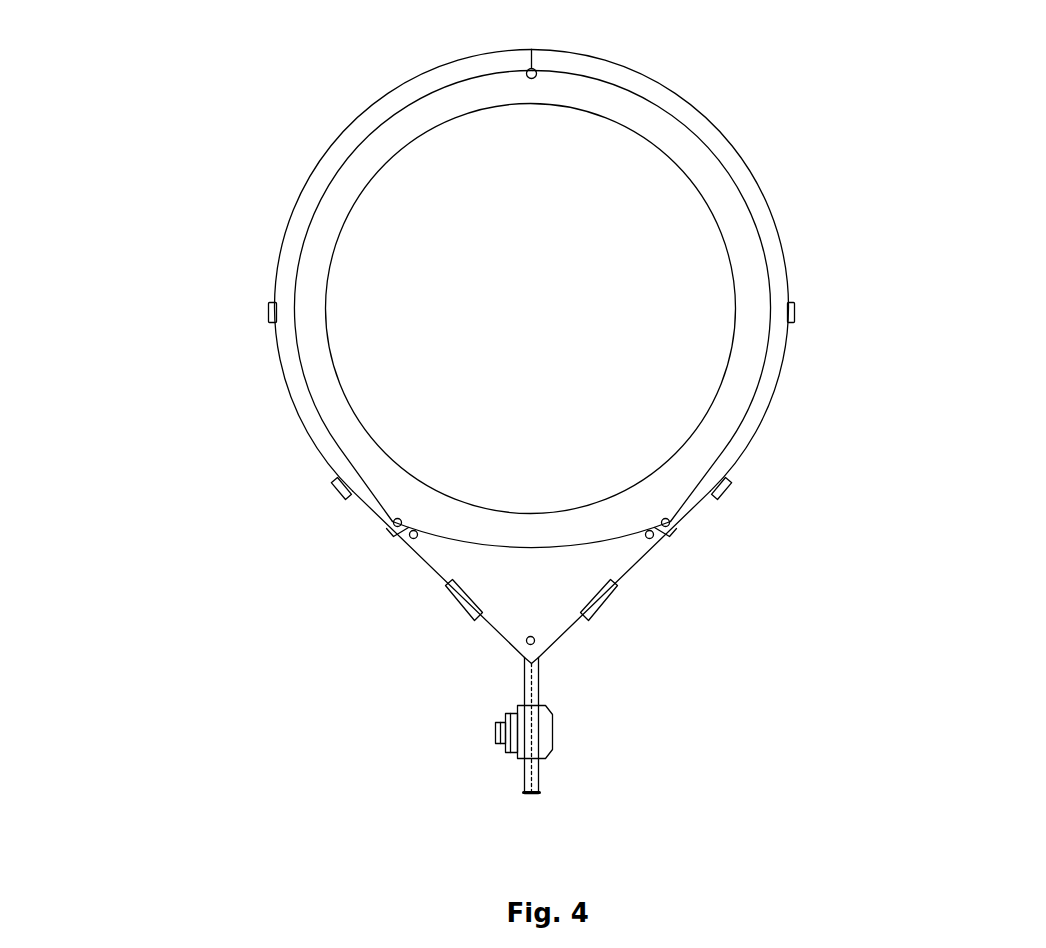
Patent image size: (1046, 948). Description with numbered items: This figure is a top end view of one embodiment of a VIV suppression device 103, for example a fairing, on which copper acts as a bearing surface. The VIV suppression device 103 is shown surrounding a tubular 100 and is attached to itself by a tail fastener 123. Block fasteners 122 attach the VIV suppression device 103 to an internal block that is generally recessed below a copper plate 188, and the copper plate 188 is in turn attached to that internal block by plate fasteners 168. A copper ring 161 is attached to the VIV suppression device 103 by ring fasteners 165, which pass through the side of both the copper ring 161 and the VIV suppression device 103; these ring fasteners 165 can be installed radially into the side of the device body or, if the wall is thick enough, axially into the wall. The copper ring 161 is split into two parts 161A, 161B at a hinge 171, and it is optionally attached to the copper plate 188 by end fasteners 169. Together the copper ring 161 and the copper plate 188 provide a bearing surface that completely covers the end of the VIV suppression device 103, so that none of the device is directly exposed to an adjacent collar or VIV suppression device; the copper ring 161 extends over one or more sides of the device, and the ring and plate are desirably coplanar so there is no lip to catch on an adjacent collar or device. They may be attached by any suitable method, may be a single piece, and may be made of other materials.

The tubular 100 is at (732, 382).
The VIV suppression device 103 is at (238, 211).
The block fasteners 122 is at (446, 605).
The tail fastener 123 is at (560, 733).
The copper ring 161 is at (806, 164).
The first part of copper ring 161A is at (330, 139).
The second part of copper ring 161B is at (712, 103).
The ring fasteners 165 is at (803, 305).
The plate fasteners 168 is at (405, 536).
The end fasteners 169 is at (390, 522).
The hinge 171 is at (523, 72).
The copper plate 188 is at (556, 608).